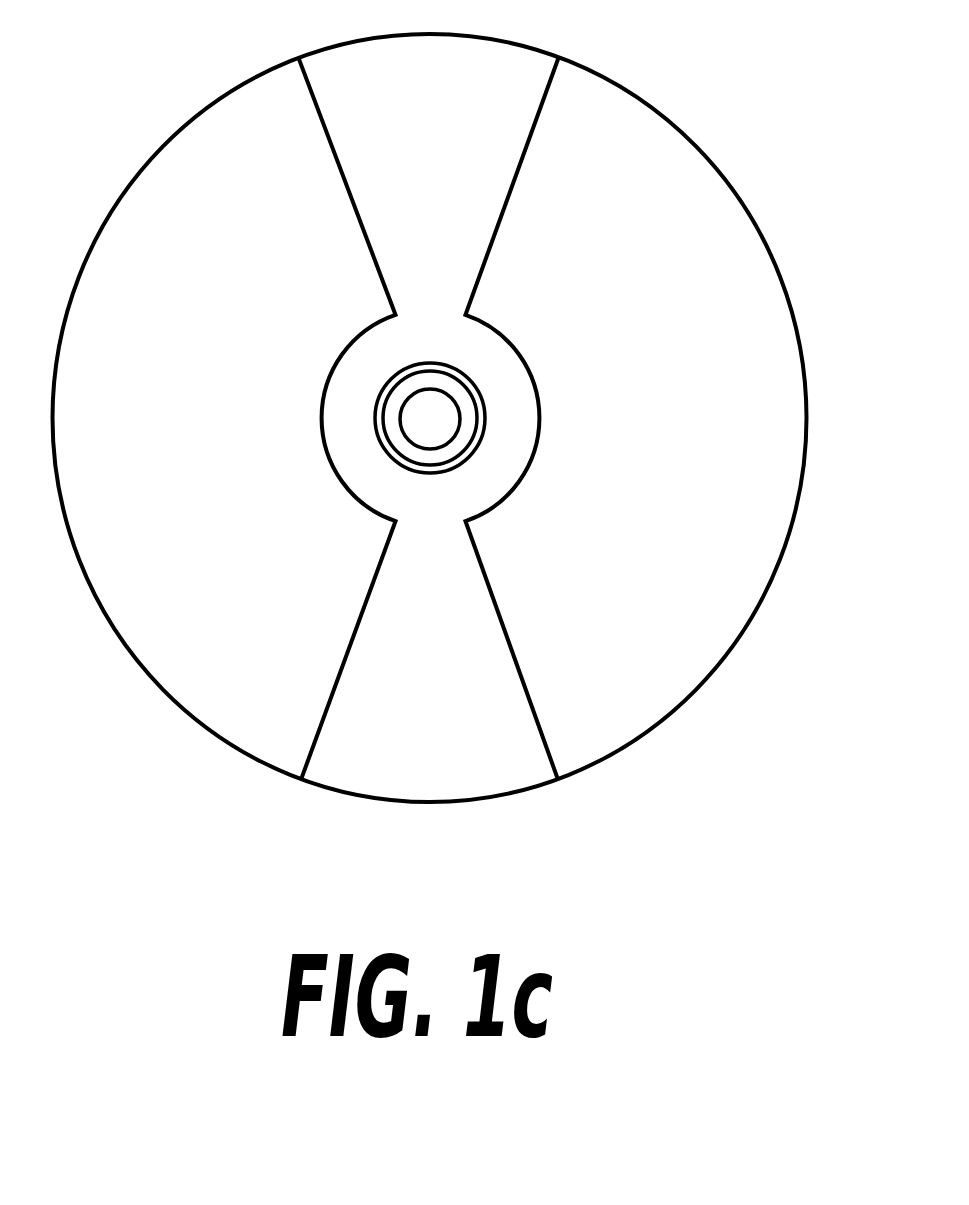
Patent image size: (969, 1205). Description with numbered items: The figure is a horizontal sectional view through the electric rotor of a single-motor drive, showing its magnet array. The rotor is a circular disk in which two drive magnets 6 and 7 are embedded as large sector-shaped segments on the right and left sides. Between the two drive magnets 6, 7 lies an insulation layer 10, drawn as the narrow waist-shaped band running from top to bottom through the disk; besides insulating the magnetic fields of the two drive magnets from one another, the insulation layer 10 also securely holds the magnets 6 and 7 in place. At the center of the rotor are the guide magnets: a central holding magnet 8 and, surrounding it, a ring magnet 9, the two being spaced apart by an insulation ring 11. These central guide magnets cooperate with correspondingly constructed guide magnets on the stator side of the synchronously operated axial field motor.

The drive magnet 6 is at (730, 238).
The drive magnet 7 is at (112, 577).
The central holding magnet 8 is at (427, 423).
The ring magnet 9 is at (444, 363).
The insulation layer 10 is at (370, 767).
The insulation ring 11 is at (465, 428).